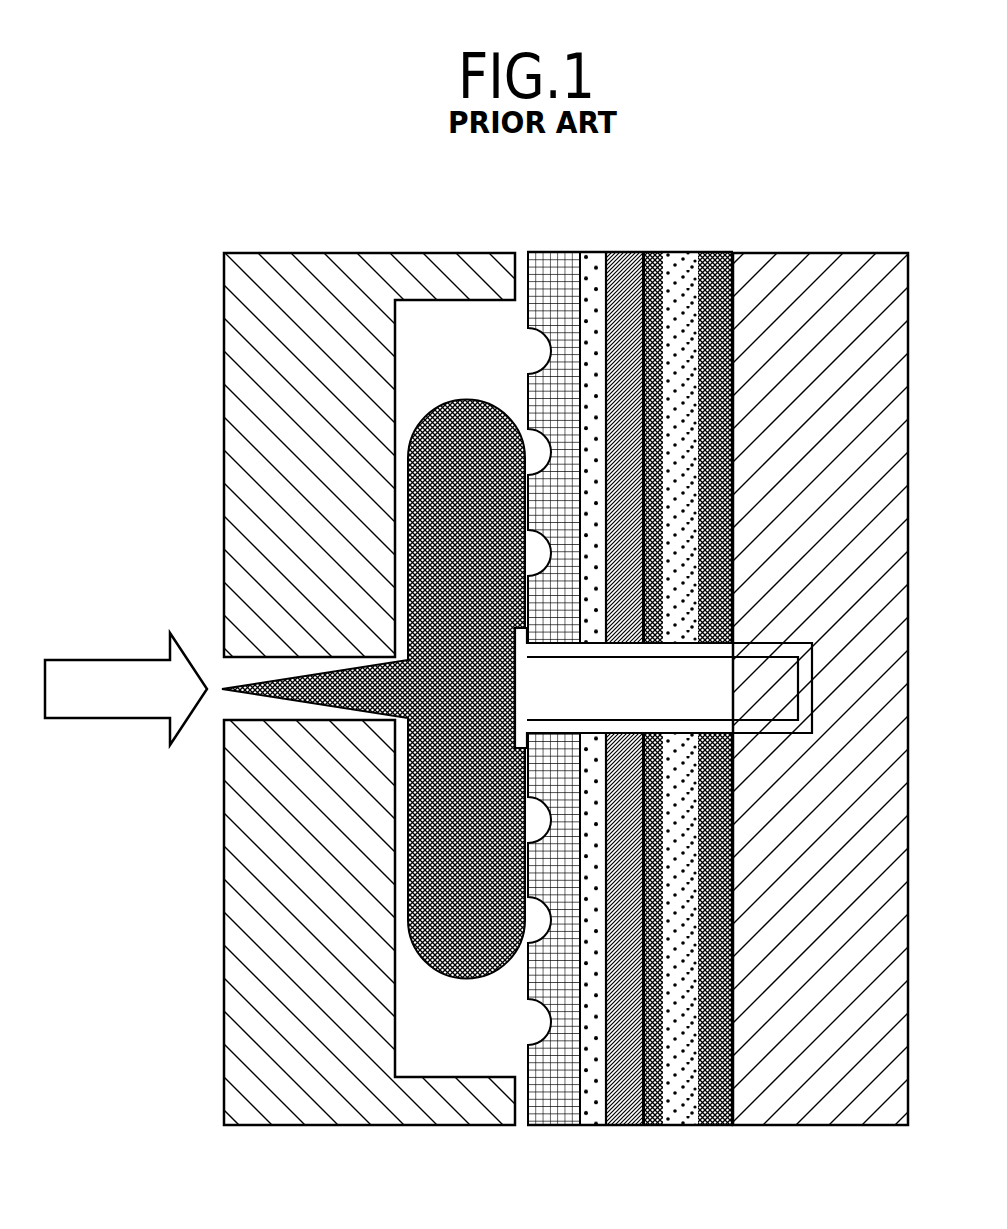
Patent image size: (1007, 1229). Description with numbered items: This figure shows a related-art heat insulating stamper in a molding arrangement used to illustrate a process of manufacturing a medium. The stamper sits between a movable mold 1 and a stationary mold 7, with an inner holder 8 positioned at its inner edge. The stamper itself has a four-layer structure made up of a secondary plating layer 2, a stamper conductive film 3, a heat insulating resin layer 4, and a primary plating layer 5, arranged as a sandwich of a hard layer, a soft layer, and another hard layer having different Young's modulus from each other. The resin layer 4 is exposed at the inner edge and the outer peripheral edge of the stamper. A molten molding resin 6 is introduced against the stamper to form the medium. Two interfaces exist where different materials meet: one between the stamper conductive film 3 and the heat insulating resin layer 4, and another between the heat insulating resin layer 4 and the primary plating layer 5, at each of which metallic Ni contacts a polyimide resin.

The movable mold 1 is at (828, 1102).
The secondary plating layer 2 is at (692, 262).
The stamper conductive film 3 is at (622, 1103).
The heat insulating resin layer 4 is at (597, 262).
The primary plating layer 5 is at (553, 1103).
The molten molding resin 6 is at (468, 397).
The stationary mold 7 is at (352, 1102).
The inner holder 8 is at (663, 705).